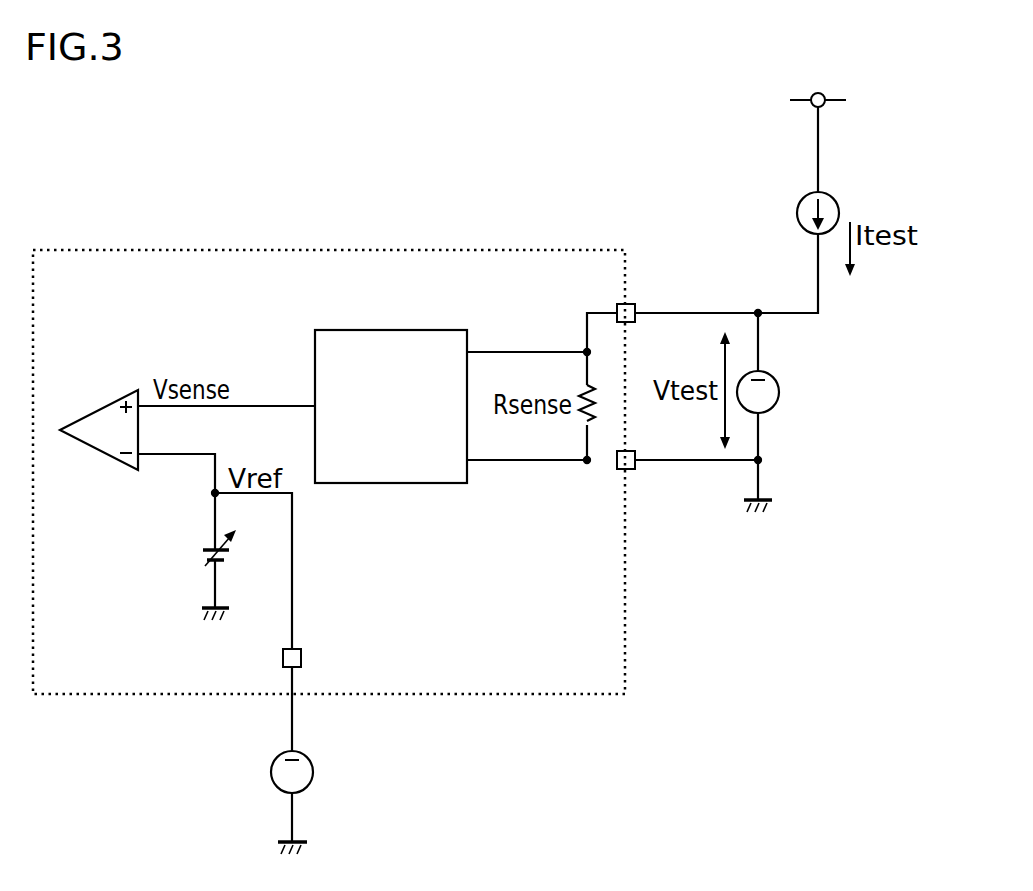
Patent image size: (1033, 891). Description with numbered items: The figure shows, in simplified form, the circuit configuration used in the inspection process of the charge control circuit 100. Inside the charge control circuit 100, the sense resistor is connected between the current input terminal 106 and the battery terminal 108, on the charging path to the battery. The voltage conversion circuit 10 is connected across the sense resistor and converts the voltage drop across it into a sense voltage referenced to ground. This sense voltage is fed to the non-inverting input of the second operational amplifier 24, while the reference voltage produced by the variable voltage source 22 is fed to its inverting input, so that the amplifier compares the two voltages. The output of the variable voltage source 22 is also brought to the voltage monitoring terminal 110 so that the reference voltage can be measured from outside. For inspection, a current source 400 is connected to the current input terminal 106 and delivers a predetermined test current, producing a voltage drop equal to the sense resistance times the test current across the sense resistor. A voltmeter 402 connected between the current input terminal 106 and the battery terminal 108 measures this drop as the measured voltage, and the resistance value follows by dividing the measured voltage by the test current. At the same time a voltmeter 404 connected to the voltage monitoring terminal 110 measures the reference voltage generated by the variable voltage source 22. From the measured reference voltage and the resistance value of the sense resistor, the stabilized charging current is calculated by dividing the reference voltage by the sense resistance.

The voltage conversion circuit 10 is at (401, 330).
The variable voltage source 22 is at (206, 554).
The second operational amplifier 24 is at (100, 409).
The charge control circuit 100 is at (534, 250).
The current input terminal 106 is at (635, 305).
The battery terminal 108 is at (618, 470).
The voltage monitoring terminal 110 is at (301, 658).
The current source 400 is at (836, 200).
The voltmeter 402 is at (779, 391).
The voltmeter 404 is at (313, 772).